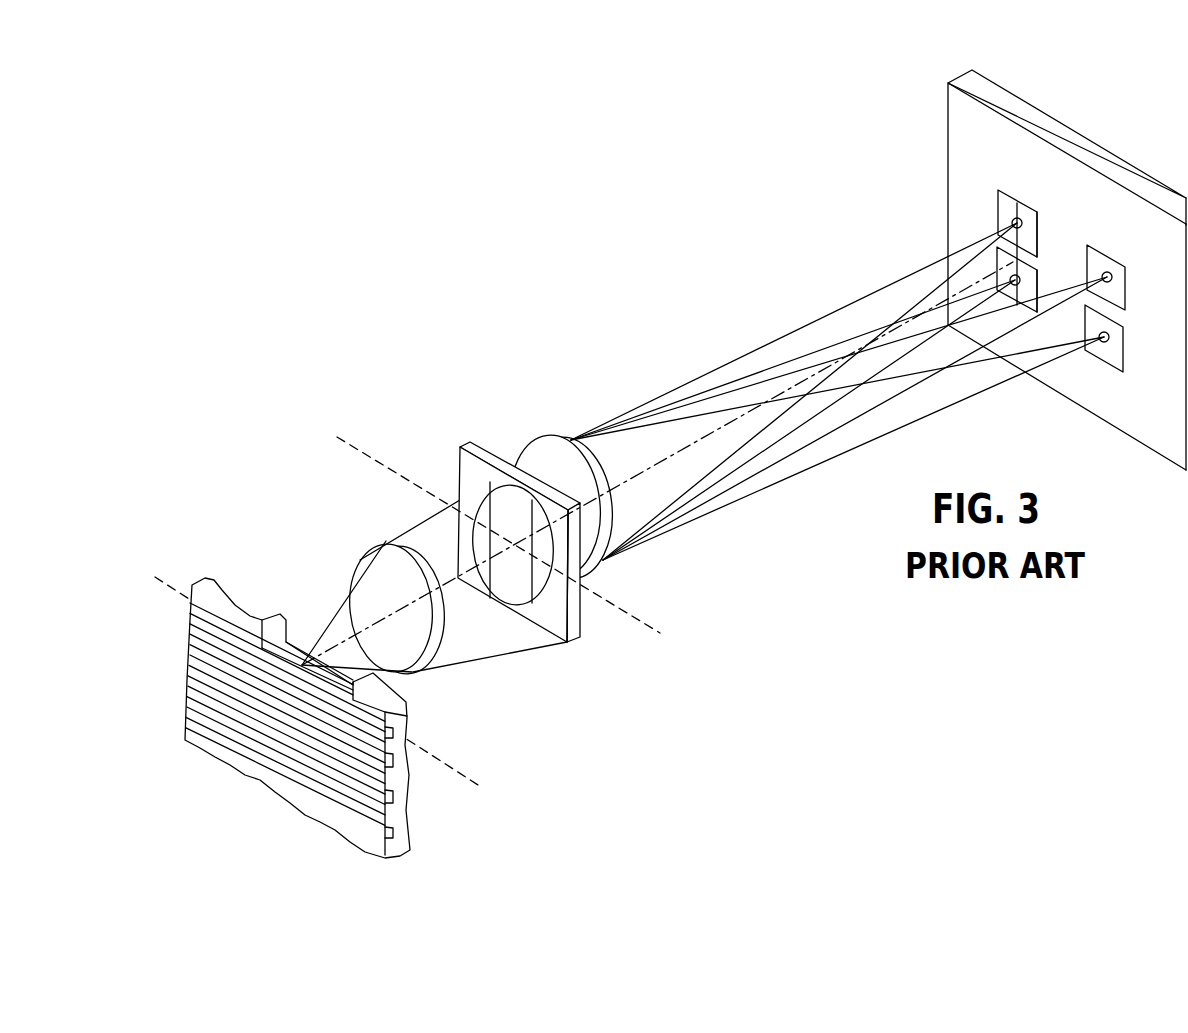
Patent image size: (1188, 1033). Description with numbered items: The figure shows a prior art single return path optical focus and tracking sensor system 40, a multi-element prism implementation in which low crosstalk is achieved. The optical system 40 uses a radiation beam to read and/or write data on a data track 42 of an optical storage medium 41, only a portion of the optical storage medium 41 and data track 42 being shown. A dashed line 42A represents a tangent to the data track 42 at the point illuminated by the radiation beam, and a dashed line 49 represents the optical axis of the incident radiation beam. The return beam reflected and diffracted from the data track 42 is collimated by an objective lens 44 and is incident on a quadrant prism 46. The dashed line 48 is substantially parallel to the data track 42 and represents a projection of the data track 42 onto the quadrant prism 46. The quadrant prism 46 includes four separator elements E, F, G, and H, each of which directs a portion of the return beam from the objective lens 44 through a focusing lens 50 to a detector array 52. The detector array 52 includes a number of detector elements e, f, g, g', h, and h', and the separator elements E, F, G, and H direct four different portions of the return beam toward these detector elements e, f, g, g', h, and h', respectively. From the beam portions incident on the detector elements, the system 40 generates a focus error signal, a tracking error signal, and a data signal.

The optical system 40 is at (337, 215).
The optical storage medium 41 is at (423, 813).
The data track 42 is at (405, 727).
The tangent line 42A is at (463, 778).
The objective lens 44 is at (386, 546).
The quadrant prism 46 is at (583, 660).
The projection line 48 is at (337, 438).
The optical axis 49 is at (340, 643).
The focusing lens 50 is at (533, 442).
The detector array 52 is at (1114, 127).
The separator element E is at (501, 503).
The separator element F is at (512, 577).
The separator element G is at (465, 518).
The separator element H is at (603, 563).
The detector element g is at (999, 228).
The detector element g' is at (1064, 221).
The detector element h is at (998, 257).
The detector element h' is at (1057, 270).
The detector element e is at (1100, 248).
The detector element f is at (1120, 340).